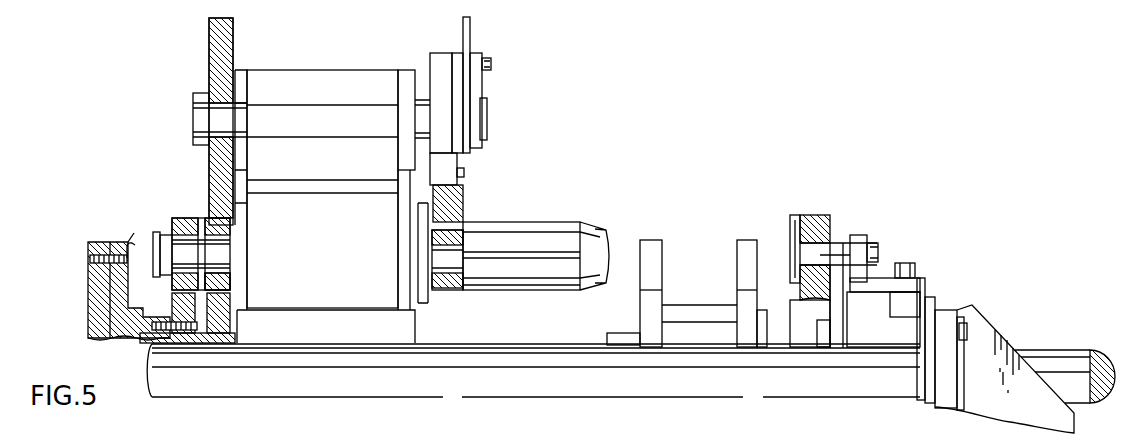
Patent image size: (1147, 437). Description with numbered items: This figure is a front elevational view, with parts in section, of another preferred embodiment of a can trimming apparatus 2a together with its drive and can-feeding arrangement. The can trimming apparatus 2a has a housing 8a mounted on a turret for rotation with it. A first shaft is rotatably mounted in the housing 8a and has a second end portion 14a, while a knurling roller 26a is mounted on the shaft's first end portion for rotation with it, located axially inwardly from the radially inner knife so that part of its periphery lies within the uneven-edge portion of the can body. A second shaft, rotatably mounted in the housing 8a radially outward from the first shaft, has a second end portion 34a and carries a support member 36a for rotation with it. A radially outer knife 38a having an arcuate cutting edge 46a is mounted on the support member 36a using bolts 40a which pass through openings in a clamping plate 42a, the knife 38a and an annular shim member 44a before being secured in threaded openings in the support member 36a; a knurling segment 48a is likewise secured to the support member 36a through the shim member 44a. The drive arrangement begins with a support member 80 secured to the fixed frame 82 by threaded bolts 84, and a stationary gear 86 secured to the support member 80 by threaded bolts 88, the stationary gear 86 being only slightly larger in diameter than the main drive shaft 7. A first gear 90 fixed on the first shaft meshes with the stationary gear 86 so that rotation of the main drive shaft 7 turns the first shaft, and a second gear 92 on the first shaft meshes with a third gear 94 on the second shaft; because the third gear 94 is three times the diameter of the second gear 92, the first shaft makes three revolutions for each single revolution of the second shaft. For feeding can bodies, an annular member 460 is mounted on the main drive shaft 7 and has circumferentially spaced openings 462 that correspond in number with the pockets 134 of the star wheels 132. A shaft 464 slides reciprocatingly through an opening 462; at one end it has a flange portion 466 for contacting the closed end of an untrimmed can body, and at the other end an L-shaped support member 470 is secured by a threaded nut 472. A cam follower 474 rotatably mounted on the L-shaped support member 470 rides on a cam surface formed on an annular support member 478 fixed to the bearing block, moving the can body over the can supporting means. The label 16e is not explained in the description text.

The can trimming apparatus 2a is at (575, 137).
The main drive shaft 7 is at (832, 393).
The housing 8a is at (287, 70).
The second end portion 14a is at (130, 233).
The frame section 16e is at (667, 175).
The knurling roller 26a is at (447, 262).
The second end portion 34a is at (150, 104).
The support member 36a is at (437, 58).
The radially outer knife 38a is at (470, 40).
The bolts 40a is at (492, 66).
The clamping plate 42a is at (478, 148).
The annular shim member 44a is at (457, 55).
The arcuate cutting edge 46a is at (470, 17).
The knurling segment 48a is at (463, 200).
The support member 80 is at (115, 322).
The fixed frame 82 is at (88, 303).
The threaded bolts 84 is at (125, 242).
The stationary gear 86 is at (192, 300).
The threaded bolts 88 is at (213, 333).
The first gear 90 is at (180, 218).
The second gear 92 is at (218, 283).
The third gear 94 is at (212, 163).
The star wheels 132 is at (740, 322).
The pockets 134 is at (740, 280).
The annular member 460 is at (795, 313).
The openings 462 is at (815, 250).
The shaft 464 is at (857, 222).
The flange portion 466 is at (795, 230).
The L-shaped support member 470 is at (864, 238).
The threaded nut 472 is at (880, 256).
The cam follower 474 is at (900, 307).
The annular support member 478 is at (905, 346).